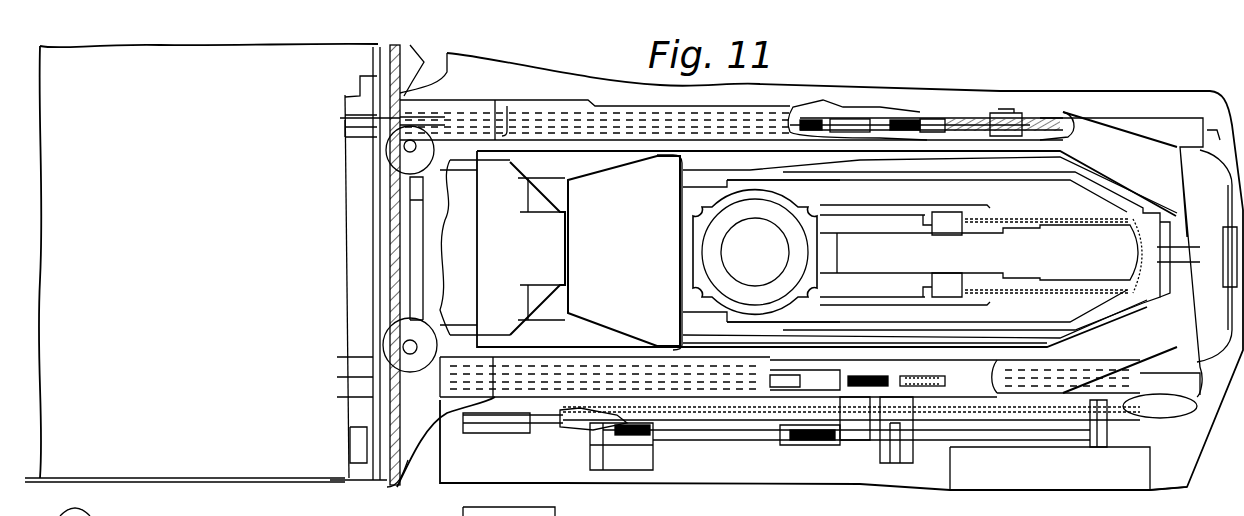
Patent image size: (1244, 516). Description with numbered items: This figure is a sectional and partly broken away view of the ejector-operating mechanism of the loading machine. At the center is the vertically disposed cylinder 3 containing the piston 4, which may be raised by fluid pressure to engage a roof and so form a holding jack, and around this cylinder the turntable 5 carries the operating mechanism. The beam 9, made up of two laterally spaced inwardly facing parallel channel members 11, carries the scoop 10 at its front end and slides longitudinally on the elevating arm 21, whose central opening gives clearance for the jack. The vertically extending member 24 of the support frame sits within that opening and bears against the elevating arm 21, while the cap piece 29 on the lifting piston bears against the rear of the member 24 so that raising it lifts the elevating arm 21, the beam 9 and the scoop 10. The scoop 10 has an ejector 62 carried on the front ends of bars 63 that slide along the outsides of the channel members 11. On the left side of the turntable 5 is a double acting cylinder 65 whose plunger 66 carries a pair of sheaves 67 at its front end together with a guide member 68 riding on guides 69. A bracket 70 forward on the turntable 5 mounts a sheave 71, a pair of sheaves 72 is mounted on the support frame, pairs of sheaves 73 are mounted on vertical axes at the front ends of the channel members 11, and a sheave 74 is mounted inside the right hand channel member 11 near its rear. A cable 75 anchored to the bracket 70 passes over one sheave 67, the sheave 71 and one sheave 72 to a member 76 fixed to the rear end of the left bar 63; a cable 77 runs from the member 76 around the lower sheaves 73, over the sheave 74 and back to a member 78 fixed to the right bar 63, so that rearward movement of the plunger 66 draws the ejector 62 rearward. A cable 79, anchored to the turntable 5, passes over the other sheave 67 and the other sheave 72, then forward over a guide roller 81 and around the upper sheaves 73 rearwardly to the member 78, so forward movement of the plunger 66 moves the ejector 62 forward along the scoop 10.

The cylinder 3 is at (792, 199).
The piston 4 is at (780, 233).
The turntable 5 is at (1193, 474).
The beam 9 is at (412, 72).
The scoop 10 is at (274, 482).
The channel members 11 is at (1167, 120).
The elevating arm 21 is at (1103, 133).
The vertically extending member 24 is at (543, 208).
The cap piece 29 is at (570, 198).
The ejector 62 is at (345, 205).
The bars 63 is at (345, 89).
The cylinder 65 is at (943, 441).
The double acting plunger 66 is at (793, 421).
The sheaves 67 is at (793, 437).
The guide member 68 is at (828, 465).
The guides 69 is at (857, 447).
The bracket 70 is at (528, 434).
The sheave 71 is at (610, 412).
The sheaves 72 is at (1190, 413).
The sheaves 73 is at (472, 205).
The sheave 74 is at (1003, 112).
The cable 75 is at (925, 378).
The member 76 is at (857, 378).
The cable 77 is at (933, 127).
The member 78 is at (850, 123).
The cable 79 is at (800, 125).
The guide roller 81 is at (440, 380).